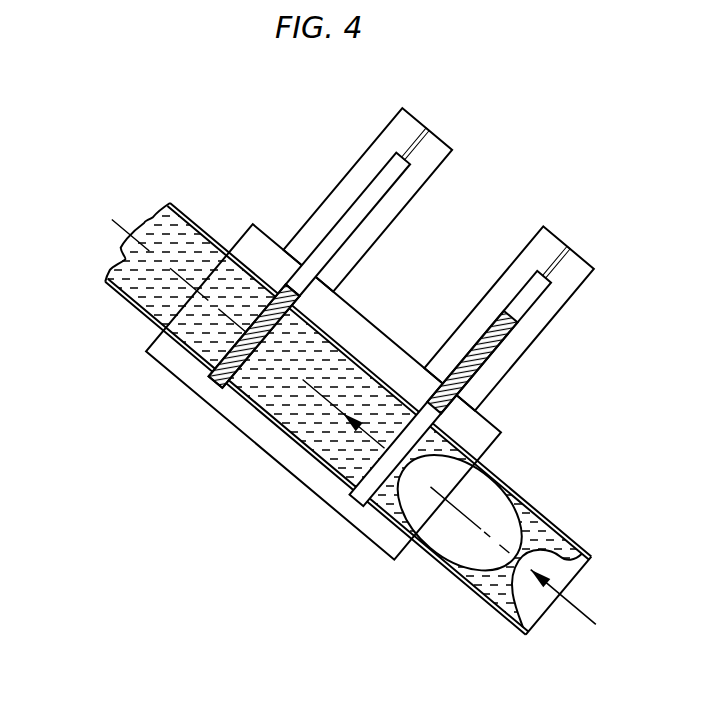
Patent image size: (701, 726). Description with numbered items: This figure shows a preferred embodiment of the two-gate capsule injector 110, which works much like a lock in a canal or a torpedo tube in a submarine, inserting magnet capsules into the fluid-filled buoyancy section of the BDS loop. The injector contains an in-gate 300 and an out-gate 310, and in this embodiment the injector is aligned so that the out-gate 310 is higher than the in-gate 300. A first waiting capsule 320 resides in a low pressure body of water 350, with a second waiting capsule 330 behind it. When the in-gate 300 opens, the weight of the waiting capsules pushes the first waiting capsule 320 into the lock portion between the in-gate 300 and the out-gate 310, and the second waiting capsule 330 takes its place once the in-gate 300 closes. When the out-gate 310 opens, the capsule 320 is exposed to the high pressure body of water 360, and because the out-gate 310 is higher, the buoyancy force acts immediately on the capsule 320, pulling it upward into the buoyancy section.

The capsule injector 110 is at (255, 226).
The in-gate 300 is at (347, 506).
The out-gate 310 is at (211, 382).
The first waiting capsule 320 is at (480, 464).
The second waiting capsule 330 is at (575, 565).
The low pressure body of water 350 is at (501, 588).
The high pressure body of water 360 is at (130, 297).